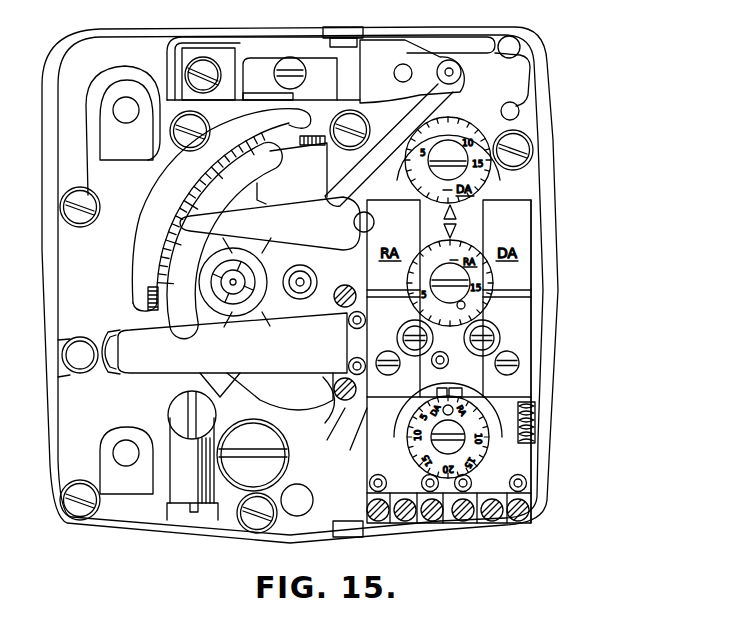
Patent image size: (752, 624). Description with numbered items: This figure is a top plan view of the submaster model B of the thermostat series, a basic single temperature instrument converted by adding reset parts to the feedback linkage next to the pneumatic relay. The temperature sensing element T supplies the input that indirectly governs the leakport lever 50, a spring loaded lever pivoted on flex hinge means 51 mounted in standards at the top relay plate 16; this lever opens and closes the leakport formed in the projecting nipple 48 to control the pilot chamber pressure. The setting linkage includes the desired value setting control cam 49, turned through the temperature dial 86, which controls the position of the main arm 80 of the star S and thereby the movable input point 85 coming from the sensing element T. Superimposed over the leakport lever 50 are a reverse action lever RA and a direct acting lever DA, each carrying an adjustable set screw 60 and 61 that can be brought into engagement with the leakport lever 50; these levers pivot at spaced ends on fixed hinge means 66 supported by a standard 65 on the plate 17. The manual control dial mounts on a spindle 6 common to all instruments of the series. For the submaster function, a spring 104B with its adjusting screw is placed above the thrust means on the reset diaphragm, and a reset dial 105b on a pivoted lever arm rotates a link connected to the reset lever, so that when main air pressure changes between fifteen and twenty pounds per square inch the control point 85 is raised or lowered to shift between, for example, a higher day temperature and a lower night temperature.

The temperature sensing element T is at (300, 28).
The movable input point 85 is at (449, 68).
The top relay plate 16 is at (452, 12).
The plate 17 is at (400, 340).
The temperature dial 86 is at (134, 265).
The desired value setting control cam 49 is at (247, 178).
The main arm 80 is at (291, 229).
The star S is at (330, 228).
The spindle 6 is at (293, 270).
The leakport lever 50 is at (250, 360).
The projecting nipple 48 is at (111, 373).
The flex hinge means 51 is at (313, 377).
The adjustable set screw 60 is at (410, 334).
The adjustable set screw 61 is at (490, 334).
The standard 65 is at (446, 523).
The fixed hinge means 66 is at (497, 523).
The reset dial 105b is at (495, 393).
The spring 104B is at (536, 422).
The submaster model B is at (548, 476).